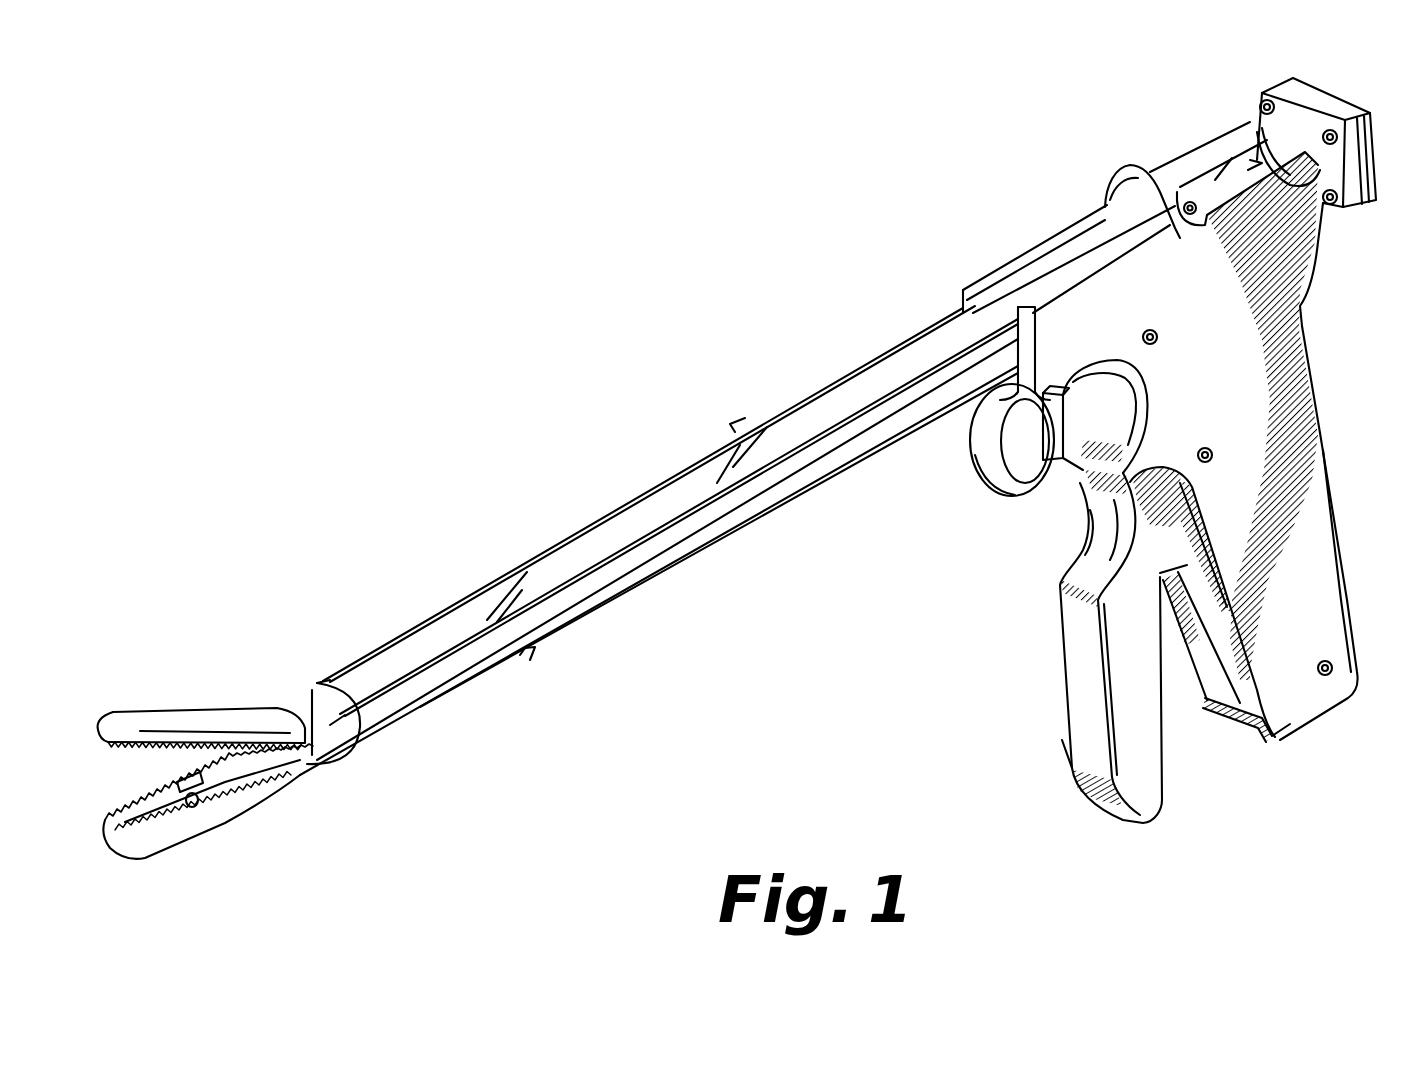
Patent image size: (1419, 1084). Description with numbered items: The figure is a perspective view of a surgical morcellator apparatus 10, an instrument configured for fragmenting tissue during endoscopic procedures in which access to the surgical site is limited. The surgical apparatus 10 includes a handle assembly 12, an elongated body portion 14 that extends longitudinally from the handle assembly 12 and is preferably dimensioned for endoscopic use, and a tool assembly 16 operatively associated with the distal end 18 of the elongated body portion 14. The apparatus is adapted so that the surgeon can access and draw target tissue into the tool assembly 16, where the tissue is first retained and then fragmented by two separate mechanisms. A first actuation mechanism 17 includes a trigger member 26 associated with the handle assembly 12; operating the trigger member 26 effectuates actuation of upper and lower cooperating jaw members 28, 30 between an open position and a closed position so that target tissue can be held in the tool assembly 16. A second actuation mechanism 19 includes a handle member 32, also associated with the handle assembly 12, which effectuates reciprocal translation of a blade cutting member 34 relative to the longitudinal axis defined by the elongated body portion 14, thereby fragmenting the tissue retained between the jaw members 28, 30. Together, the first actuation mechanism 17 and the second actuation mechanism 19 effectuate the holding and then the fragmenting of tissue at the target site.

The surgical apparatus 10 is at (760, 261).
The handle assembly 12 is at (1365, 477).
The elongated body portion 14 is at (626, 494).
The tool assembly 16 is at (208, 734).
The first actuation mechanism 17 is at (999, 511).
The distal end 18 is at (332, 726).
The second actuation mechanism 19 is at (1092, 648).
The trigger member 26 is at (980, 447).
The upper jaw member 28 is at (167, 718).
The lower jaw member 30 is at (268, 785).
The handle member 32 is at (1150, 757).
The blade cutting member 34 is at (193, 808).